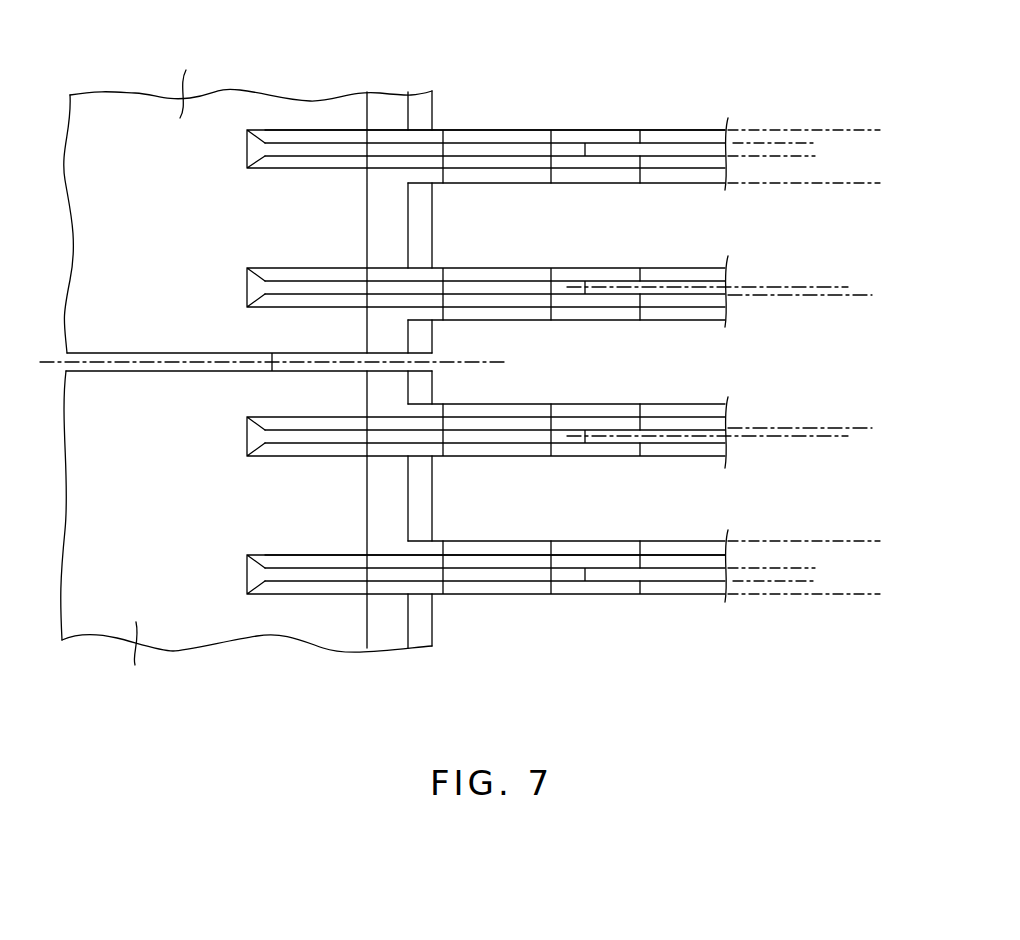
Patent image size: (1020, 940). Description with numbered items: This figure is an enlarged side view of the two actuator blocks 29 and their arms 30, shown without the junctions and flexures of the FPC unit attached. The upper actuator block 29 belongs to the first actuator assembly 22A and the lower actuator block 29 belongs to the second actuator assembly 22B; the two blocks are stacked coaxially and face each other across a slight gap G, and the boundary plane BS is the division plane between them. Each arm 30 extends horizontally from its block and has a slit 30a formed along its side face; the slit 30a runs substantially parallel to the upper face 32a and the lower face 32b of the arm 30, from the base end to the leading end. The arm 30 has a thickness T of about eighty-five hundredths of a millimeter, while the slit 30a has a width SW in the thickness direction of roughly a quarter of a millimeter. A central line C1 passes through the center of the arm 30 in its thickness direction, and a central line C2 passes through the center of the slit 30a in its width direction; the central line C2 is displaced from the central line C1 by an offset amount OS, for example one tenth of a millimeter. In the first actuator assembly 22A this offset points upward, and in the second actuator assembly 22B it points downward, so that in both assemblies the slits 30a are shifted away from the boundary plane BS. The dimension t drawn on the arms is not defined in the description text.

The actuator block 29 is at (246, 372).
The first actuator assembly 22A is at (372, 78).
The second actuator assembly 22B is at (458, 652).
The arm 30 is at (637, 130).
The slit 30a is at (479, 143).
The upper face 32a is at (532, 130).
The lower face 32b is at (522, 184).
The boundary plane BS is at (452, 362).
The gap G is at (156, 322).
The thickness of the arm T is at (860, 583).
The layer thickness t is at (757, 579).
The width of the slit SW is at (805, 606).
The offset amount OS is at (808, 447).
The central line of the arm C1 is at (866, 295).
The central line of the slit C2 is at (848, 287).